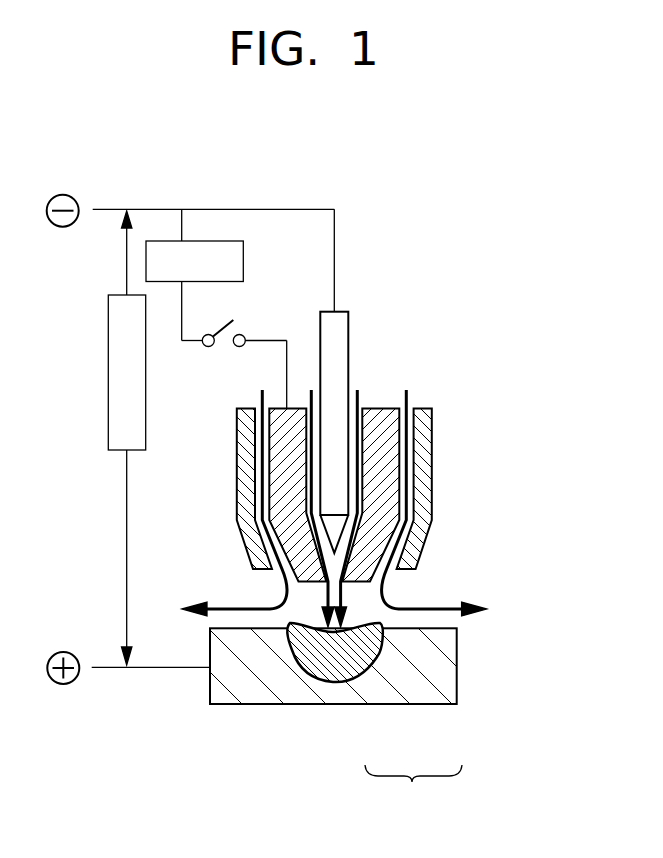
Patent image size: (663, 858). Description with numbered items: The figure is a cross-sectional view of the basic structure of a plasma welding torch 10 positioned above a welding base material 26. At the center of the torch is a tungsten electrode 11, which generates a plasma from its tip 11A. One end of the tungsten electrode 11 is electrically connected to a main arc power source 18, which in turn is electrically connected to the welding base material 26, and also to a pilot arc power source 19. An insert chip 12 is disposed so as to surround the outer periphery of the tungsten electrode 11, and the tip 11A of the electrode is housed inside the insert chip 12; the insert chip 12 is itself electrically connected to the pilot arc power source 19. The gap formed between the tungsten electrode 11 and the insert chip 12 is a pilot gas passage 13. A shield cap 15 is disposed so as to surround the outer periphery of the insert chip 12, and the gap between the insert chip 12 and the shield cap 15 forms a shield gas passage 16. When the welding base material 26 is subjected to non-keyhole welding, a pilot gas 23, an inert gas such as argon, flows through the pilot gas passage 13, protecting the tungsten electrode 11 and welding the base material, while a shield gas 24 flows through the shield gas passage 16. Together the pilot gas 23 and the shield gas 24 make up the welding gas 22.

The plasma welding torch 10 is at (352, 409).
The tungsten electrode 11 is at (337, 337).
The tip 11A is at (327, 532).
The insert chip 12 is at (292, 411).
The pilot gas passage 13 is at (305, 449).
The shield cap 15 is at (425, 443).
The shield gas passage 16 is at (258, 482).
The main arc power source 18 is at (115, 372).
The pilot arc power source 19 is at (235, 253).
The welding gas 22 is at (413, 794).
The pilot gas 23 is at (347, 597).
The shield gas 24 is at (415, 610).
The welding base material 26 is at (445, 663).